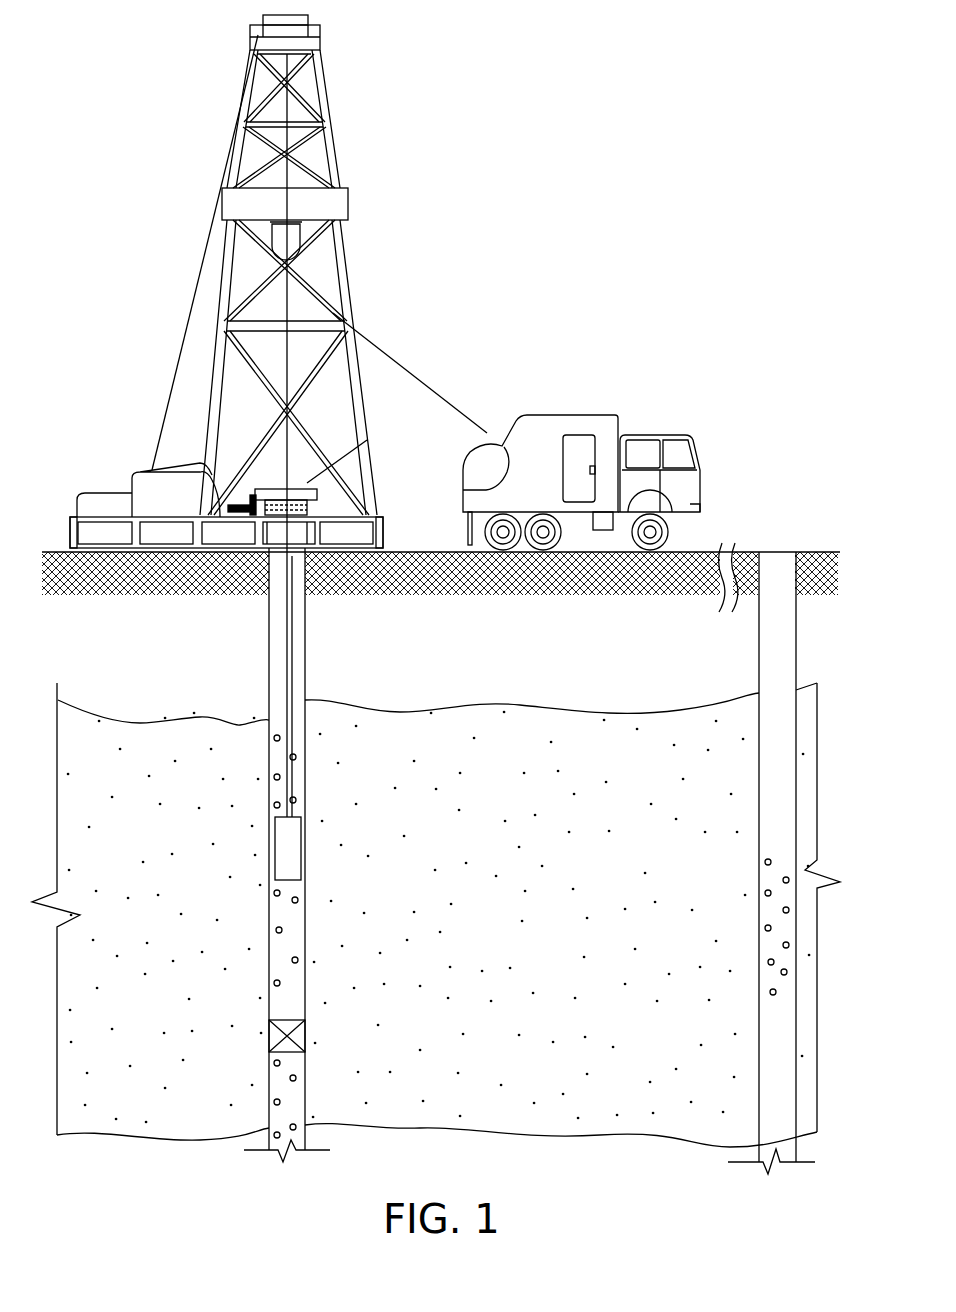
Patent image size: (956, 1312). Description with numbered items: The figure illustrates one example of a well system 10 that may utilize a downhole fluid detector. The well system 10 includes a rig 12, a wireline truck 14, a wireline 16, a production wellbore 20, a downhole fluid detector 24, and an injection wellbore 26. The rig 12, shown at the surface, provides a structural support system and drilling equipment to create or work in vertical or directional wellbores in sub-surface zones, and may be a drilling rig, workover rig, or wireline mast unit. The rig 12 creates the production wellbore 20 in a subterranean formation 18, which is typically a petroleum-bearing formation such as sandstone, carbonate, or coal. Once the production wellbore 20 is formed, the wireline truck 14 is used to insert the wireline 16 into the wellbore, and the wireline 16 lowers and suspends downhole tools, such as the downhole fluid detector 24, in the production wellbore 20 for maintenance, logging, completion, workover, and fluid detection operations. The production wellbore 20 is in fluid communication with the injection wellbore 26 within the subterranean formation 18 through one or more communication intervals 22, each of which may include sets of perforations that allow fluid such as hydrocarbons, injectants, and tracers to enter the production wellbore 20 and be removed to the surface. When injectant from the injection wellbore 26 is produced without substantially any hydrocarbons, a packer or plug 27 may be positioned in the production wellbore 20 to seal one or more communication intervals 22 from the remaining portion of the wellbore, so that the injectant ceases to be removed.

The well system 10 is at (560, 194).
The rig 12 is at (325, 98).
The wireline truck 14 is at (572, 414).
The wireline 16 is at (386, 340).
The subterranean formation 18 is at (182, 853).
The production wellbore 20 is at (305, 641).
The communication intervals 22 is at (306, 757).
The downhole fluid detector 24 is at (275, 853).
The injection wellbore 26 is at (759, 833).
The packer or plug 27 is at (290, 1020).